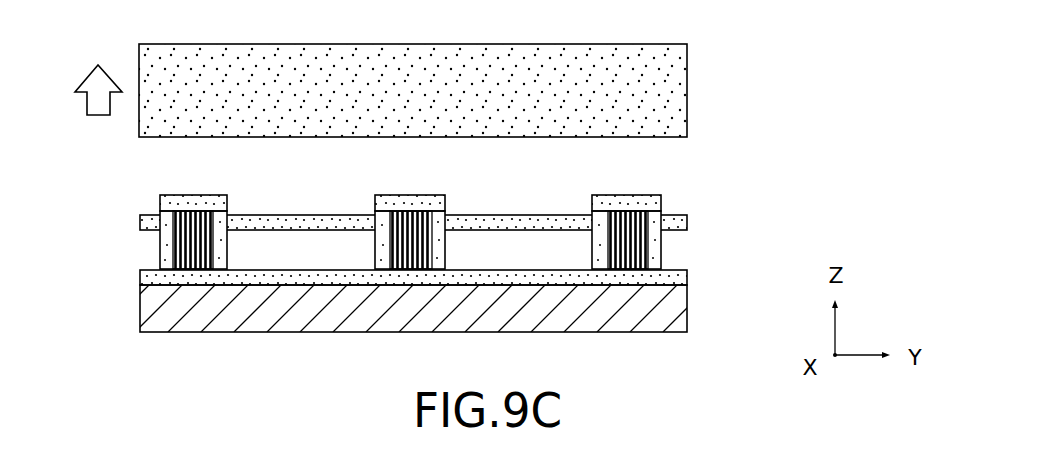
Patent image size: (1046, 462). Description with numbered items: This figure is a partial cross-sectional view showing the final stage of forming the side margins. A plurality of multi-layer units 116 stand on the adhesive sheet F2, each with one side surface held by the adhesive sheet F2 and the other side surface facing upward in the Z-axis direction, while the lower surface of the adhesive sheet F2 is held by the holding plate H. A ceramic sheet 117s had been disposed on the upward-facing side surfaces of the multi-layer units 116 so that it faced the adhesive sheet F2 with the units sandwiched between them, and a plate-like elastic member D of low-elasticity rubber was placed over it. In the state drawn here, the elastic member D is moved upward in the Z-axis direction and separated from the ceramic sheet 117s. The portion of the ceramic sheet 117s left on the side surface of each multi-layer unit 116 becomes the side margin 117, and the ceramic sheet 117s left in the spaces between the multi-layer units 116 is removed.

The elastic member D is at (667, 94).
The multi-layer unit 116 is at (470, 209).
The side margin 117 is at (202, 202).
The ceramic sheet 117s is at (672, 220).
The adhesive sheet F2 is at (676, 272).
The holding plate H is at (667, 317).